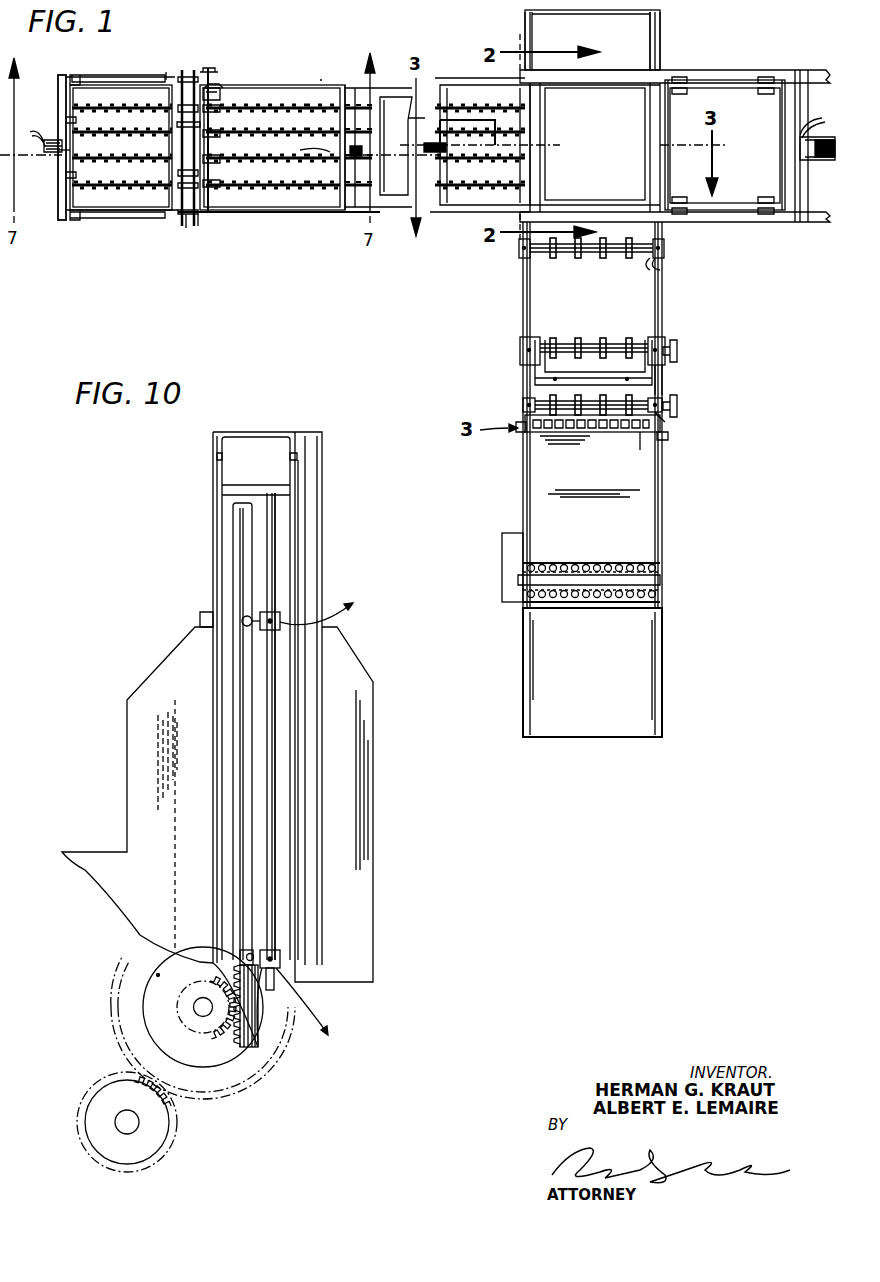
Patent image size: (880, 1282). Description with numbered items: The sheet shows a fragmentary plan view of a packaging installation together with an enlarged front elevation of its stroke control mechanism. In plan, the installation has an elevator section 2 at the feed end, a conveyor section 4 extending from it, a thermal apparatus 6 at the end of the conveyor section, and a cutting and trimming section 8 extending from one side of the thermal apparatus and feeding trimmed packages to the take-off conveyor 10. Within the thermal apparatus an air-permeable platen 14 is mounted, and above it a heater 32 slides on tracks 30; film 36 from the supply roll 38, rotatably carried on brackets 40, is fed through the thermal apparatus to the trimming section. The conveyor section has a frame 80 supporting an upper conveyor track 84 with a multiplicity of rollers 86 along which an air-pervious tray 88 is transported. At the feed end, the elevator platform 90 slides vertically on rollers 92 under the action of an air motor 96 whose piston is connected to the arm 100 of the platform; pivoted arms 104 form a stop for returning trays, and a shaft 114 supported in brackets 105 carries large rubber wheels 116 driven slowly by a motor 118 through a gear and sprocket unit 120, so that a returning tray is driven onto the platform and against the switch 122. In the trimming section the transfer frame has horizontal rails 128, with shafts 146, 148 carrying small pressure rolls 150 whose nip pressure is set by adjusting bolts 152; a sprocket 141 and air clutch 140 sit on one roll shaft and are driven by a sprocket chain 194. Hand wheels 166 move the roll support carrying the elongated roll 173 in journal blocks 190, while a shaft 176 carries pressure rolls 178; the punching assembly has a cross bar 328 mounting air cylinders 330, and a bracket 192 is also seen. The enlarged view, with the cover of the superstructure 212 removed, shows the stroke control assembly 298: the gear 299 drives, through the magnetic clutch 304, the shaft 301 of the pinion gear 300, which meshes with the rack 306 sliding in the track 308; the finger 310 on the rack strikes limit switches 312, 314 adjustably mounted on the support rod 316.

In FIG. 1, the elevator section 2 is at (168, 78).
In FIG. 1, the conveyor section 4 is at (316, 82).
In FIG. 1, the thermal apparatus 6 is at (744, 82).
In FIG. 1, the cutting and trimming section 8 is at (662, 477).
In FIG. 1, the take-off conveyor 10 is at (572, 737).
In FIG. 1, the air-permeable platen 14 is at (595, 147).
In FIG. 1, the tracks 30 is at (812, 70).
In FIG. 1, the heater 32 is at (725, 145).
In FIG. 1, the film 36 is at (592, 40).
In FIG. 1, the supply roll 38 is at (658, 22).
In FIG. 1, the brackets 40 is at (525, 20).
In FIG. 1, the frame 80 is at (313, 213).
In FIG. 1, the upper conveyor track 84 is at (282, 104).
In FIG. 1, the rollers 86 is at (262, 187).
In FIG. 1, the air-pervious tray 88 is at (393, 96).
In FIG. 1, the platform 90 is at (120, 85).
In FIG. 1, the rollers 92 is at (74, 82).
In FIG. 1, the air motor 96 is at (46, 152).
In FIG. 1, the arm 100 is at (48, 140).
In FIG. 1, the arms 104 is at (196, 116).
In FIG. 1, the brackets 105 is at (192, 228).
In FIG. 1, the shaft 114 is at (183, 158).
In FIG. 1, the large rubber wheels 116 is at (200, 226).
In FIG. 1, the motor 118 is at (210, 96).
In FIG. 1, the gear and sprocket unit 120 is at (208, 68).
In FIG. 1, the switch 122 is at (62, 178).
In FIG. 1, the horizontal rails 128 is at (662, 302).
In FIG. 1, the air clutch 140 is at (678, 348).
In FIG. 1, the sprocket 141 is at (666, 342).
In FIG. 1, the shaft 146 is at (664, 266).
In FIG. 1, the shaft 148 is at (615, 340).
In FIG. 1, the pressure rolls 150 is at (555, 257).
In FIG. 1, the adjusting bolts 152 is at (528, 350).
In FIG. 1, the hand wheels 166 is at (518, 440).
In FIG. 1, the elongated roll 173 is at (546, 402).
In FIG. 1, the shaft 176 is at (598, 432).
In FIG. 1, the pressure rolls 178 is at (540, 438).
In FIG. 1, the journal blocks 190 is at (668, 420).
In FIG. 1, the lower T-bracket 192 is at (678, 408).
In FIG. 1, the sprocket chain 194 is at (665, 378).
In FIG. 1, the superstructure 212 is at (660, 580).
In FIG. 10, the superstructure 212 is at (324, 550).
In FIG. 10, the stroke control assembly 298 is at (260, 1032).
In FIG. 10, the gear 299 is at (136, 1088).
In FIG. 10, the pinion gear 300 is at (216, 1040).
In FIG. 10, the shaft 301 is at (205, 1012).
In FIG. 10, the magnetic clutch 304 is at (228, 1038).
In FIG. 10, the rack 306 is at (262, 1040).
In FIG. 10, the track 308 is at (240, 546).
In FIG. 10, the finger 310 is at (245, 950).
In FIG. 10, the limit switch 312 is at (285, 970).
In FIG. 10, the limit switch 314 is at (282, 618).
In FIG. 10, the support rod 316 is at (278, 885).
In FIG. 1, the cross bar 328 is at (640, 434).
In FIG. 1, the air cylinders 330 is at (570, 432).